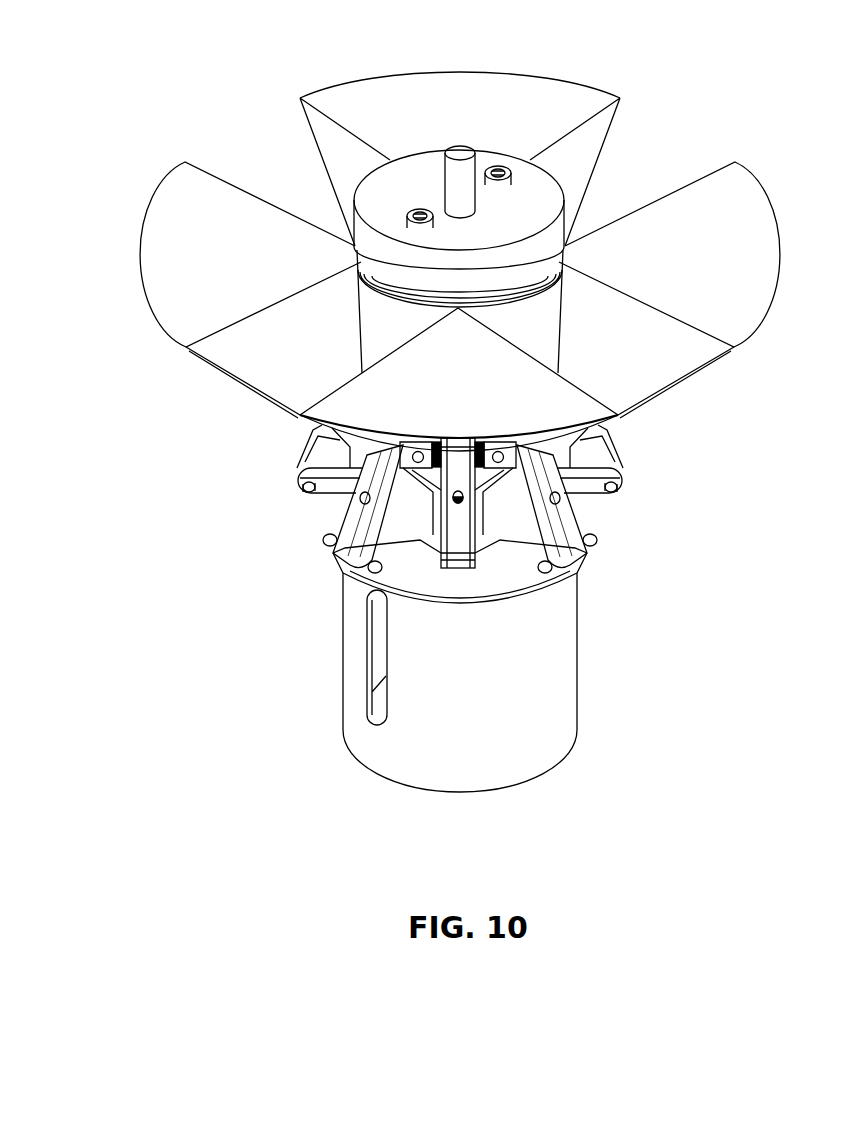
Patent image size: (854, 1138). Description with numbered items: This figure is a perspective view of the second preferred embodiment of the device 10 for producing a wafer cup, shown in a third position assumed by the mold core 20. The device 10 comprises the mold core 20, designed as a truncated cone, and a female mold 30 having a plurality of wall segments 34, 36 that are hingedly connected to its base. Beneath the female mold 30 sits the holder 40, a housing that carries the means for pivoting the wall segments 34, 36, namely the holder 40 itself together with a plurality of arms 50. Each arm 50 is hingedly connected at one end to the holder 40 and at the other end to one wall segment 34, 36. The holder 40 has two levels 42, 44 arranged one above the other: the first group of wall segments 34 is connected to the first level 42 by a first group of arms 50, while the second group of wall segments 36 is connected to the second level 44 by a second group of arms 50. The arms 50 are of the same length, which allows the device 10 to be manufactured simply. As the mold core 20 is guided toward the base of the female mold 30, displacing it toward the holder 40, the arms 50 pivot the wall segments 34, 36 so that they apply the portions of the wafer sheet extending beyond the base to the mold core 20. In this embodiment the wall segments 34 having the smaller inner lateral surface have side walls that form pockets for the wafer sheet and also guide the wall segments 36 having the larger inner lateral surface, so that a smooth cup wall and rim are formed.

The device for producing a wafer cup 10 is at (151, 128).
The mold core 20 is at (505, 244).
The female mold 30 is at (343, 677).
The wall segments 34 is at (475, 116).
The wall segments 36 is at (395, 336).
The holder 40 is at (483, 769).
The first level 42 is at (303, 480).
The second level 44 is at (340, 558).
The arms 50 is at (607, 443).